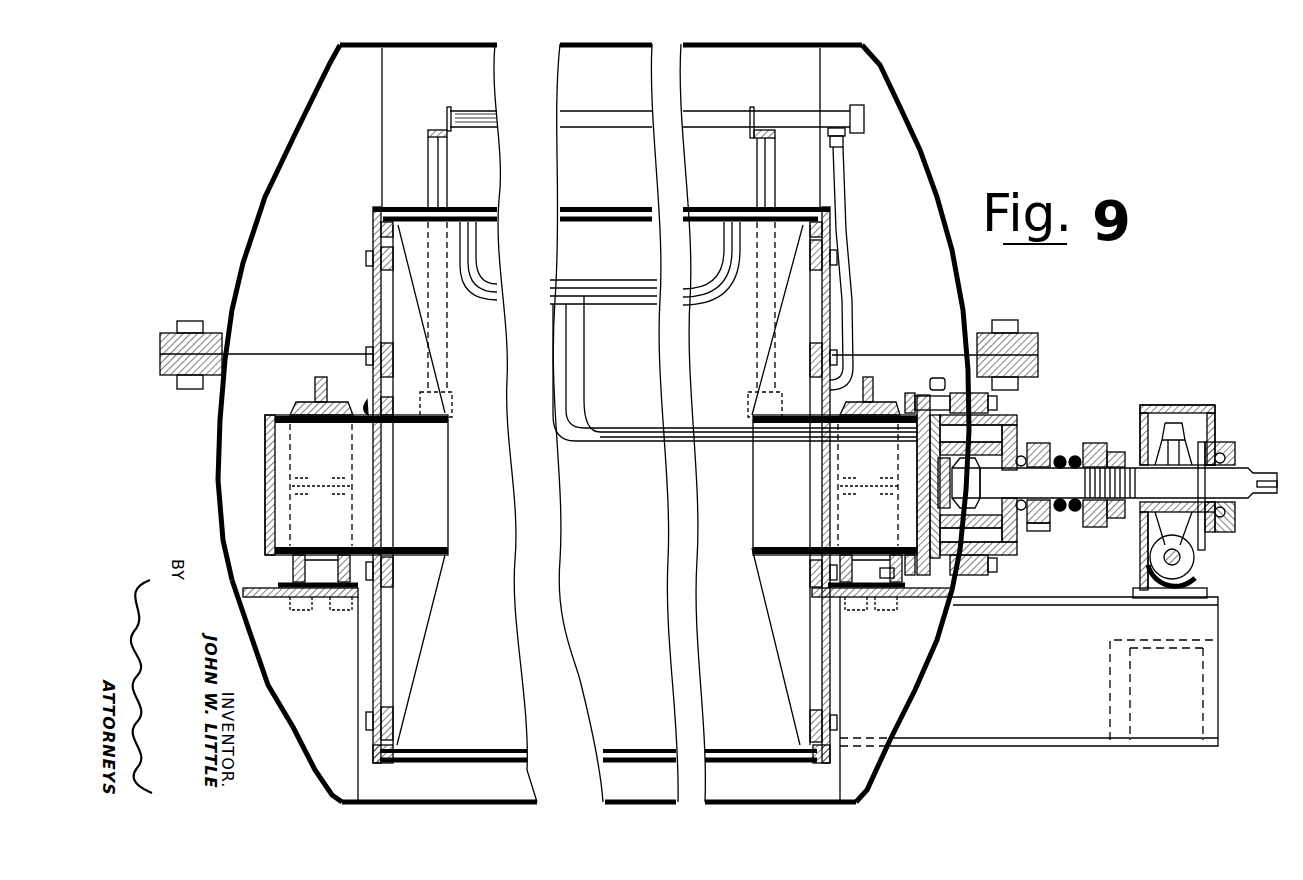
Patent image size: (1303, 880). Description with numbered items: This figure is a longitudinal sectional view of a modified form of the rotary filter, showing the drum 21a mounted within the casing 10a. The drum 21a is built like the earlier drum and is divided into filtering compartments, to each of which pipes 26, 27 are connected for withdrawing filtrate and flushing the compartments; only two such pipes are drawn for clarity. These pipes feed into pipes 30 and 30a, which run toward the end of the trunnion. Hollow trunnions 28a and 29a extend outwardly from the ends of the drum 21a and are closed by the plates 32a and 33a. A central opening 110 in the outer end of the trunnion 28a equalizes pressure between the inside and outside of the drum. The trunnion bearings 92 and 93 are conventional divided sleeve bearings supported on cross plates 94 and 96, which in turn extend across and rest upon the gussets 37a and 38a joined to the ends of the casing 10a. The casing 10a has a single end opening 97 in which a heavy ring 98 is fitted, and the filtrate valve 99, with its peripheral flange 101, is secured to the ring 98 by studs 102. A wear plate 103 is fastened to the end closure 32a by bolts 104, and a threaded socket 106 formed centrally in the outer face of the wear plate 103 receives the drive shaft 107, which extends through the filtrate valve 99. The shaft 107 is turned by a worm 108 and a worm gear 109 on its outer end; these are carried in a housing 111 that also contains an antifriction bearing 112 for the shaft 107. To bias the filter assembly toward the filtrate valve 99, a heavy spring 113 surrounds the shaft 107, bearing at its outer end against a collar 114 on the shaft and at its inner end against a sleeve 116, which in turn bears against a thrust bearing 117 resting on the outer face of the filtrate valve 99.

The casing 10a is at (925, 156).
The drum 21a is at (580, 203).
The pipe 26 is at (622, 280).
The pipe 27 is at (648, 300).
The trunnion 28a is at (363, 410).
The trunnion 29a is at (810, 416).
The pipe 30 is at (716, 428).
The pipe 30a is at (716, 441).
The plate 32a is at (917, 464).
The plate 33a is at (265, 437).
The gusset 37a is at (297, 692).
The gusset 38a is at (903, 675).
The trunnion bearing 92 is at (293, 567).
The trunnion bearing 93 is at (888, 593).
The cross plate 94 is at (325, 597).
The cross plate 96 is at (927, 592).
The end opening 97 is at (1038, 337).
The heavy ring 98 is at (968, 390).
The filtrate valve 99 is at (1018, 430).
The peripheral flange 101 is at (982, 573).
The stud 102 is at (993, 405).
The wear plate 103 is at (917, 520).
The bolt 104 is at (923, 400).
The threaded socket 106 is at (913, 482).
The drive shaft 107 is at (1238, 480).
The worm 108 is at (1188, 560).
The worm gear 109 is at (1195, 528).
The central opening 110 is at (273, 492).
The housing 111 is at (1187, 410).
The antifriction bearing 112 is at (1222, 440).
The heavy spring 113 is at (1062, 452).
The collar 114 is at (1102, 522).
The sleeve 116 is at (1038, 502).
The thrust bearing 117 is at (1022, 447).